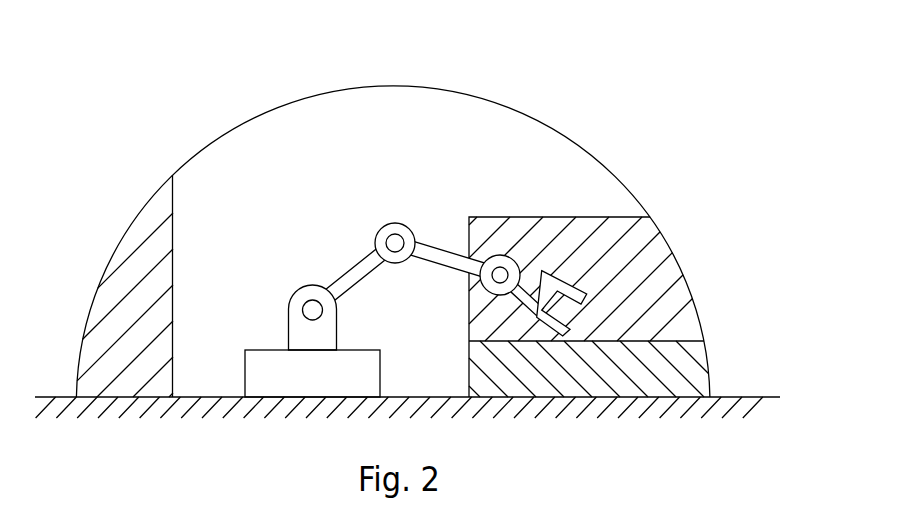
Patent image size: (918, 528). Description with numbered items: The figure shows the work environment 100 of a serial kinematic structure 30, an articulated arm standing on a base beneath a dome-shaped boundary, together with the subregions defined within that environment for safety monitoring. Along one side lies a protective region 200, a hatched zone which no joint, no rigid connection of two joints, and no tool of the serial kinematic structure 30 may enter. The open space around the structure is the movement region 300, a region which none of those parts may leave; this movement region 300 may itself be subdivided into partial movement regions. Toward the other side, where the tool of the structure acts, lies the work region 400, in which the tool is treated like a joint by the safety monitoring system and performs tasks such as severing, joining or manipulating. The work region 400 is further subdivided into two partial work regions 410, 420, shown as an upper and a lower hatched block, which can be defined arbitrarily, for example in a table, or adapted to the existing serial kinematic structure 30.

The work environment 100 is at (482, 97).
The protective region 200 is at (139, 260).
The movement region 300 is at (235, 168).
The serial kinematic structure 30 is at (307, 275).
The work region 400 is at (602, 215).
The partial work region 410 is at (623, 288).
The partial work region 420 is at (660, 370).